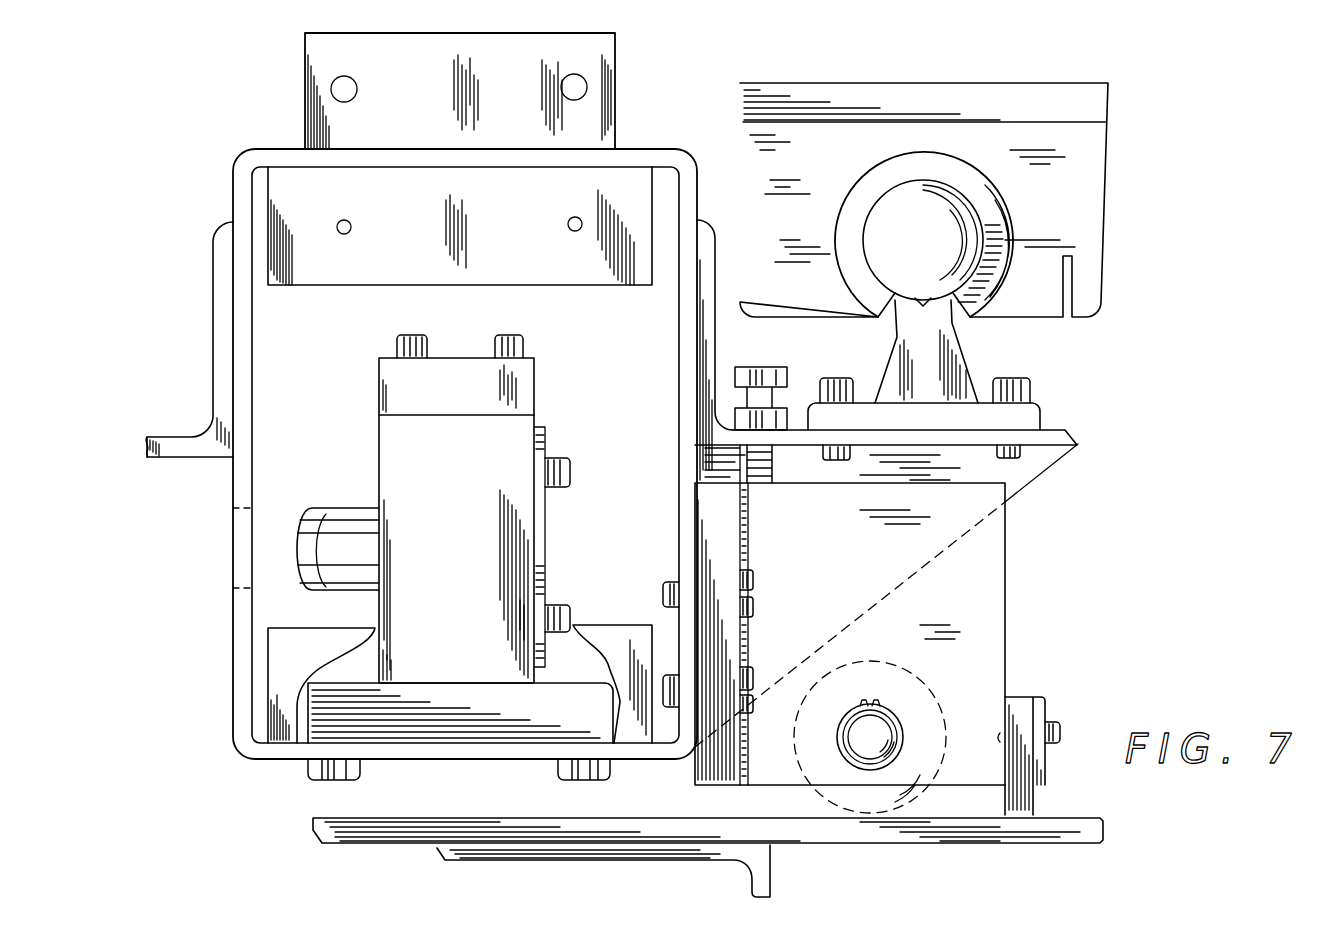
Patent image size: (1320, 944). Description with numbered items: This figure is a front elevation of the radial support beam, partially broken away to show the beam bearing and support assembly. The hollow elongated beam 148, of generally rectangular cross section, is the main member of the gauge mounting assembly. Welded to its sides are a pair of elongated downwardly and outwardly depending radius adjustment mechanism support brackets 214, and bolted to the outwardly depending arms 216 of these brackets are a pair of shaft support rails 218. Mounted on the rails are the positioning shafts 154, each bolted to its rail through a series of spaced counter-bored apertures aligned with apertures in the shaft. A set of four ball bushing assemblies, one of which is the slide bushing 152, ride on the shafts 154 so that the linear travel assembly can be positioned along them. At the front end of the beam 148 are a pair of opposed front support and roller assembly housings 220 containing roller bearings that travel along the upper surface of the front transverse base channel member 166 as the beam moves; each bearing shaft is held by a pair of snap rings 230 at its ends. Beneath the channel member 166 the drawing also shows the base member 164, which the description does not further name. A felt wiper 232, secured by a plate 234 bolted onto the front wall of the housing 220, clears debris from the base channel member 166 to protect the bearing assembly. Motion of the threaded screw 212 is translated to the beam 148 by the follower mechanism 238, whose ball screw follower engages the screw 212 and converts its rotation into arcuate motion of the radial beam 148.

The hollow elongated beam 148 is at (258, 148).
The slide bushing 152 is at (872, 133).
The shaft 154 is at (935, 219).
The base leg 164 is at (771, 878).
The front transverse base channel member 166 is at (843, 845).
The screw 212 is at (366, 510).
The radius adjustment mechanism support bracket 214 is at (213, 337).
The outwardly depending arm 216 is at (1066, 433).
The shaft support rail 218 is at (958, 355).
The front support and roller assembly housing 220 is at (982, 629).
The snap ring 230 is at (878, 710).
The felt wiper 232 is at (1012, 697).
The plate 234 is at (1044, 707).
The follower mechanism 238 is at (556, 433).